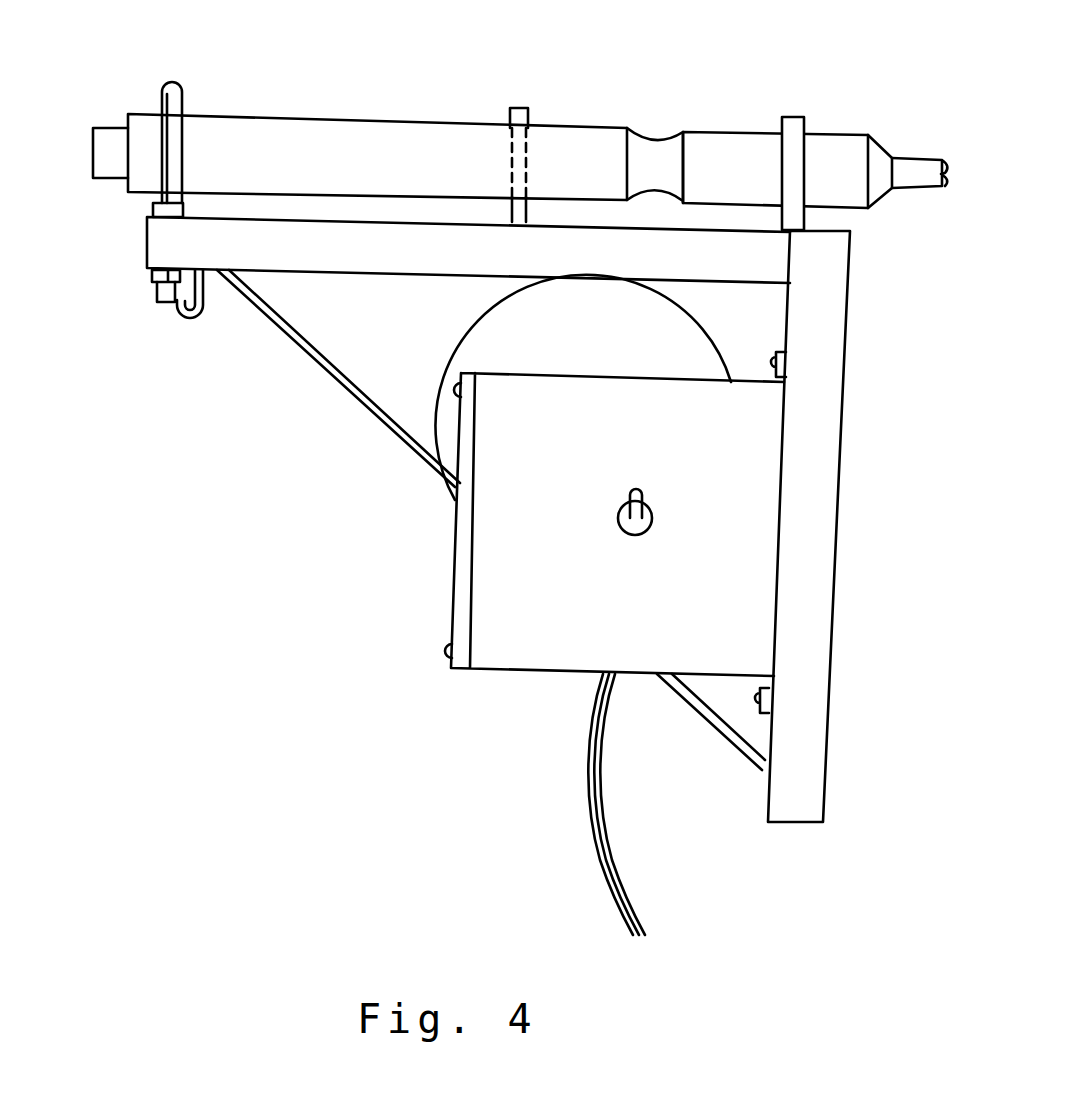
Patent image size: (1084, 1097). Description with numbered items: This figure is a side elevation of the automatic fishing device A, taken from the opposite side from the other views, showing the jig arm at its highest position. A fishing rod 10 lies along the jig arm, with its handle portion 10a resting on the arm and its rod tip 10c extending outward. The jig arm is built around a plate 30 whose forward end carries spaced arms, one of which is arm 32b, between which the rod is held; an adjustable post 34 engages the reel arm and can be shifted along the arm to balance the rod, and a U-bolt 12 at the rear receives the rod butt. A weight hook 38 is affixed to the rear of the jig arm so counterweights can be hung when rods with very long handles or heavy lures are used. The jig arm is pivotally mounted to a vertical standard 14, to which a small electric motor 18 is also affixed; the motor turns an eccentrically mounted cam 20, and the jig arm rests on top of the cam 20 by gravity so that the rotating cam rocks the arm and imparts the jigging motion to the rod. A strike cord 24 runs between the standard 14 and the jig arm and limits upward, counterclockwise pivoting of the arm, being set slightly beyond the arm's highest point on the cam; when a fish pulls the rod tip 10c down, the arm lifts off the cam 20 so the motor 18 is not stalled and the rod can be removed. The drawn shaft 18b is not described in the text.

The fishing rod 10 is at (507, 159).
The handle portion 10a is at (397, 118).
The rod tip 10c is at (133, 193).
The U-bolt 12 is at (184, 116).
The vertical standard 14 is at (838, 474).
The electric motor 18 is at (468, 613).
The motor shaft 18b is at (626, 538).
The cam 20 is at (614, 346).
The strike cord 24 is at (333, 373).
The plate 30 is at (350, 216).
The spaced arm 32b is at (790, 117).
The adjustable post 34 is at (518, 108).
The weight hook 38 is at (177, 312).
The automatic fishing device A is at (453, 520).